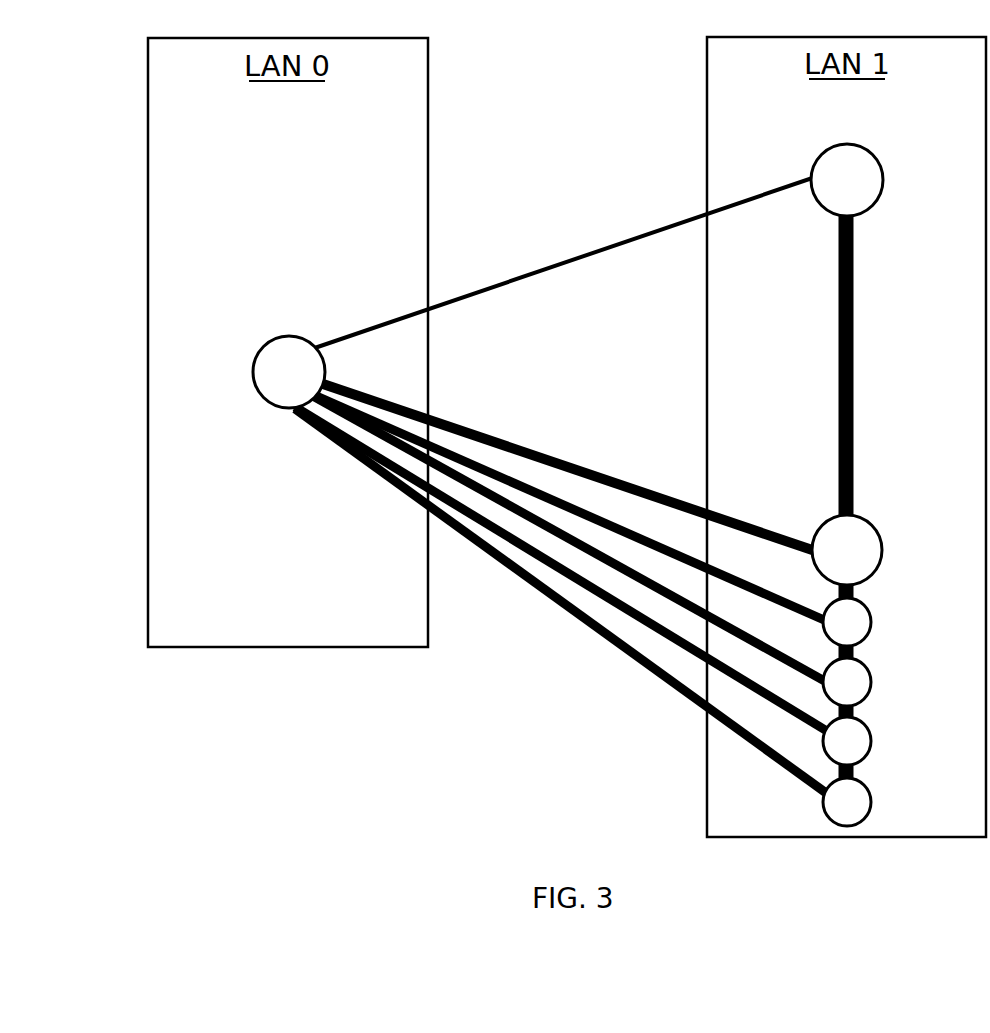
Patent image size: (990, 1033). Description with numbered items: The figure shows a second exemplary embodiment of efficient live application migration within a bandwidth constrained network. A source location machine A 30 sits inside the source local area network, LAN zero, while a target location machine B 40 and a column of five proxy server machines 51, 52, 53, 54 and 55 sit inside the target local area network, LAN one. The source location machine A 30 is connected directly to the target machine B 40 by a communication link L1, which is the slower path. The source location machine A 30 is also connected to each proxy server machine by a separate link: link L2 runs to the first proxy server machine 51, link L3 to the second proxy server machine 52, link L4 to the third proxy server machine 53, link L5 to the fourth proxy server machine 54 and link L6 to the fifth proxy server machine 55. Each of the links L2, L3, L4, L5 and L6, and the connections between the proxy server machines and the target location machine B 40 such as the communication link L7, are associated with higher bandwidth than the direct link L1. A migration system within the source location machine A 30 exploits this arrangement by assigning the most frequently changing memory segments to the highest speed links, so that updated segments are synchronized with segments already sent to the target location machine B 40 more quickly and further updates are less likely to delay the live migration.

The source location machine A 30 is at (289, 336).
The target location machine B 40 is at (873, 152).
The proxy server machine C1 51 is at (870, 523).
The proxy server machine C2 52 is at (870, 620).
The proxy server machine C3 53 is at (870, 680).
The proxy server machine C4 54 is at (870, 740).
The proxy server machine C5 55 is at (870, 800).
The communication link L1 is at (693, 214).
The communication link L2 is at (742, 520).
The communication link L3 is at (732, 572).
The communication link L4 is at (741, 632).
The communication link L5 is at (752, 688).
The communication link L6 is at (752, 737).
The communication link L7 is at (853, 370).